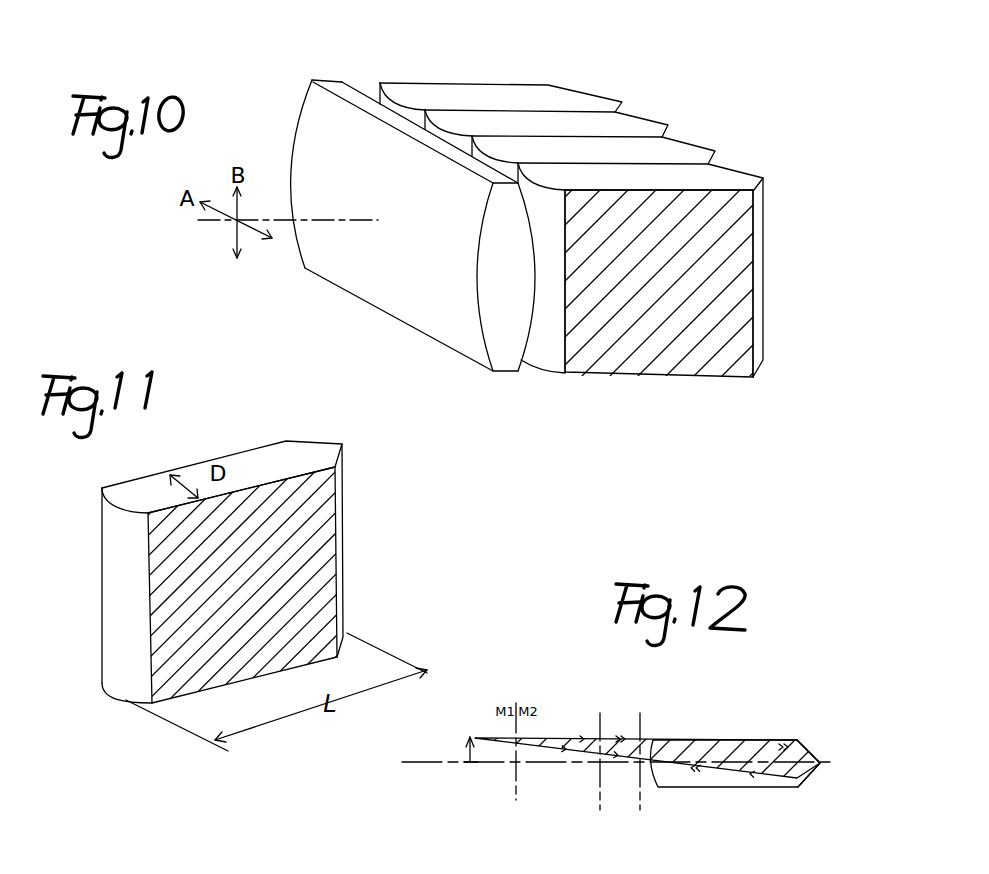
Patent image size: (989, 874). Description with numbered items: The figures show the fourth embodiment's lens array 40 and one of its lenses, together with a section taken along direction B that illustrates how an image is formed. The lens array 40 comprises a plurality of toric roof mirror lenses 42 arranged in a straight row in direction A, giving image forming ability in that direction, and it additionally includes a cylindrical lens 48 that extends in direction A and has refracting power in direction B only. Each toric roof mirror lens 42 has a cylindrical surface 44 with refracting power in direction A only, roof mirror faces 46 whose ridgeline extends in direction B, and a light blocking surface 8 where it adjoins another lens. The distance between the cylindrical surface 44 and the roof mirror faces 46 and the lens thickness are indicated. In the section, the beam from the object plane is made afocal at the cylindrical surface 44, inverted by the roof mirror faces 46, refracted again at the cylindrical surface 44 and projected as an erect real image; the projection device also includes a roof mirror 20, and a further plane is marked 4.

In FIG. 10, the lens array 40 is at (528, 73).
In FIG. 10, the toric roof mirror lens 42 is at (593, 100).
In FIG. 11, the toric roof mirror lens 42 is at (267, 437).
In FIG. 12, the toric roof mirror lens 42 is at (740, 795).
In FIG. 10, the cylindrical surface 44 is at (533, 360).
In FIG. 11, the cylindrical surface 44 is at (108, 577).
In FIG. 10, the roof mirror faces 46 is at (738, 165).
In FIG. 11, the roof mirror faces 46 is at (307, 440).
In FIG. 12, the roof mirror faces 46 is at (817, 752).
In FIG. 10, the cylindrical lens 48 is at (395, 288).
In FIG. 12, the cylindrical lens 48 is at (600, 793).
In FIG. 10, the light blocking surface 8 is at (707, 290).
In FIG. 11, the light blocking surface 8 is at (293, 585).
In FIG. 12, the light blocking surface 8 is at (733, 742).
In FIG. 12, the focal plane 4 is at (647, 780).
In FIG. 12, the roof mirror 20 is at (513, 783).